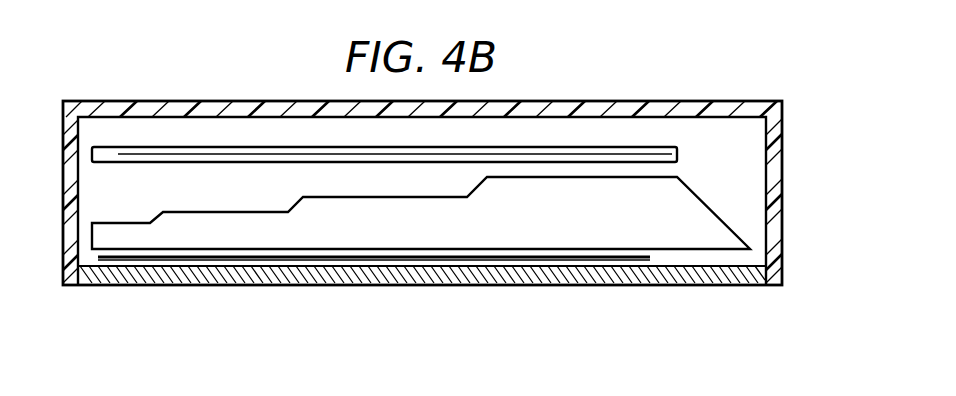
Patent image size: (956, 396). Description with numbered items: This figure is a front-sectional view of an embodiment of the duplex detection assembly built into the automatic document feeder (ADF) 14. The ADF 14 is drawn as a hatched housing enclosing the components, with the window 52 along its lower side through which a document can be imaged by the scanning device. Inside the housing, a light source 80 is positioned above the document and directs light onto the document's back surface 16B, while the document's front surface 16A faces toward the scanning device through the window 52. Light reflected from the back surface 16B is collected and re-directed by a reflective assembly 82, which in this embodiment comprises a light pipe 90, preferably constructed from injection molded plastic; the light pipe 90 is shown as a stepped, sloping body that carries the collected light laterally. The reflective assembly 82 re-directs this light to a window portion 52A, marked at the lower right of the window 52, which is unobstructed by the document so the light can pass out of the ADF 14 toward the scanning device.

The automatic document feeder 14 is at (801, 176).
The window 52 is at (258, 279).
The window portion 52A is at (763, 298).
The light source 80 is at (677, 152).
The light pipe 90 is at (722, 222).
The reflective assembly 82 is at (623, 226).
The back surface 16B is at (503, 255).
The front surface 16A is at (402, 258).